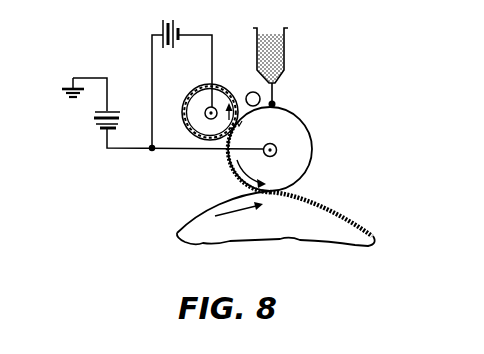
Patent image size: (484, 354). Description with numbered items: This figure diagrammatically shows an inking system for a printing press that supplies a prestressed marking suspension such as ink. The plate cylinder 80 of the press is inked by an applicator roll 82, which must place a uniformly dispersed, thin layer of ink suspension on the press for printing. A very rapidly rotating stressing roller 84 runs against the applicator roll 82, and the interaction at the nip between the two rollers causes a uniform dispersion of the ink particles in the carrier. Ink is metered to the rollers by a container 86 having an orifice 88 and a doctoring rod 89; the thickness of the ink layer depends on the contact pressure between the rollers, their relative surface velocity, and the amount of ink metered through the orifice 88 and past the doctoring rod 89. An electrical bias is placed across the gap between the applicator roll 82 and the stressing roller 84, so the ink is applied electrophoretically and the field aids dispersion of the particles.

The plate cylinder 80 is at (355, 229).
The applicator roll 82 is at (311, 142).
The stressing roller 84 is at (199, 132).
The container 86 is at (286, 62).
The orifice 88 is at (277, 100).
The doctoring rod 89 is at (247, 93).